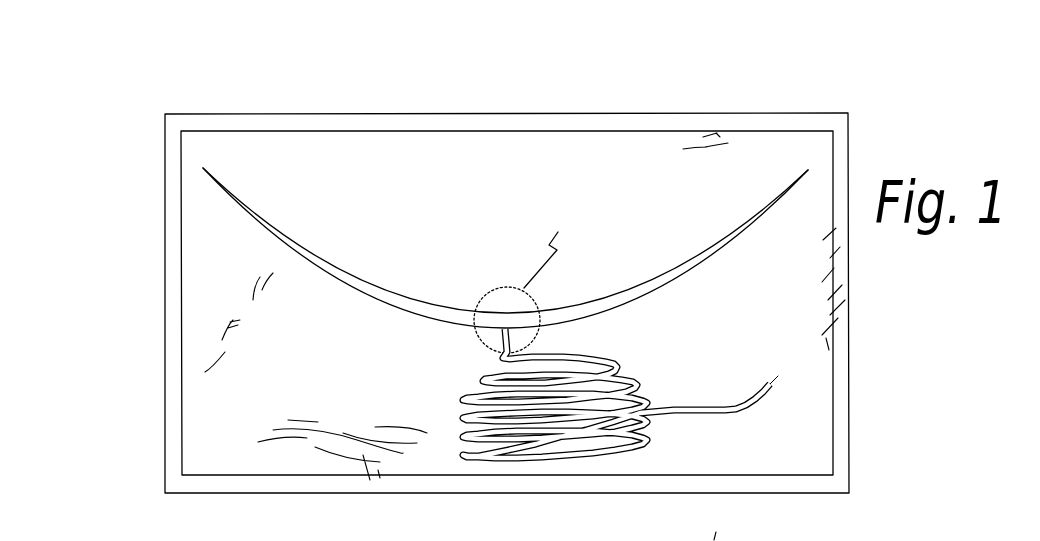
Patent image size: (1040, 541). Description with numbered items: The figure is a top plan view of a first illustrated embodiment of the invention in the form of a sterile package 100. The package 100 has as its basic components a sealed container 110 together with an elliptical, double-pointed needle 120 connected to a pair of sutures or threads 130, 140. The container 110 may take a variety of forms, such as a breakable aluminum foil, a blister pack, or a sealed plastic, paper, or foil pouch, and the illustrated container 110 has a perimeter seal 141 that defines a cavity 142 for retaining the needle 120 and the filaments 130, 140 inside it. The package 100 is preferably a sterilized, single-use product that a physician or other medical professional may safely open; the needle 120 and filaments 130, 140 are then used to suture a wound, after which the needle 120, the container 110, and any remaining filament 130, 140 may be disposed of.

The sterile package 100 is at (208, 90).
The sealed container 110 is at (366, 112).
The double-pointed needle 120 is at (233, 158).
The suture or thread 130 is at (730, 398).
The suture or thread 140 is at (779, 409).
The perimeter seal 141 is at (604, 131).
The cavity 142 is at (524, 185).